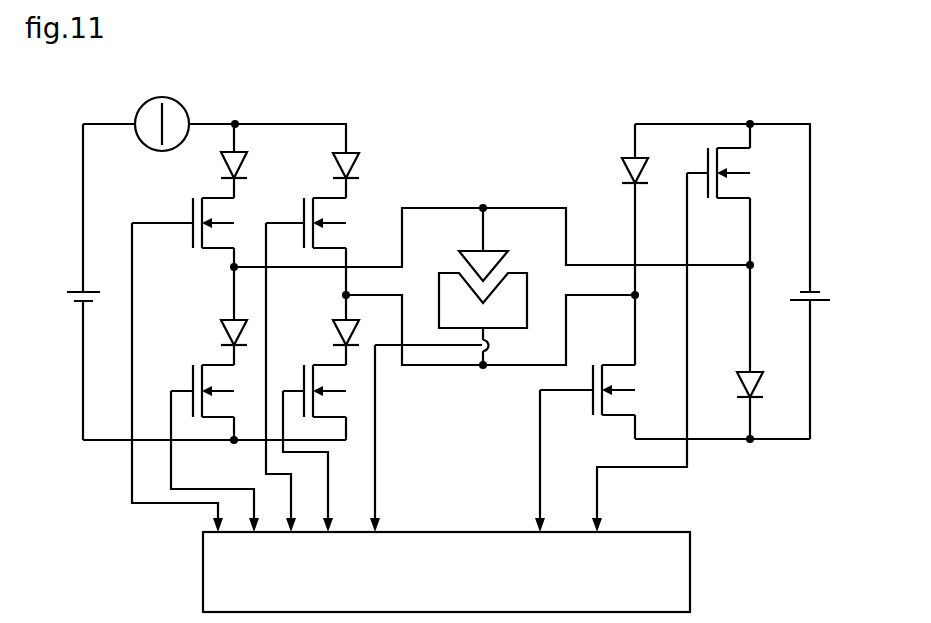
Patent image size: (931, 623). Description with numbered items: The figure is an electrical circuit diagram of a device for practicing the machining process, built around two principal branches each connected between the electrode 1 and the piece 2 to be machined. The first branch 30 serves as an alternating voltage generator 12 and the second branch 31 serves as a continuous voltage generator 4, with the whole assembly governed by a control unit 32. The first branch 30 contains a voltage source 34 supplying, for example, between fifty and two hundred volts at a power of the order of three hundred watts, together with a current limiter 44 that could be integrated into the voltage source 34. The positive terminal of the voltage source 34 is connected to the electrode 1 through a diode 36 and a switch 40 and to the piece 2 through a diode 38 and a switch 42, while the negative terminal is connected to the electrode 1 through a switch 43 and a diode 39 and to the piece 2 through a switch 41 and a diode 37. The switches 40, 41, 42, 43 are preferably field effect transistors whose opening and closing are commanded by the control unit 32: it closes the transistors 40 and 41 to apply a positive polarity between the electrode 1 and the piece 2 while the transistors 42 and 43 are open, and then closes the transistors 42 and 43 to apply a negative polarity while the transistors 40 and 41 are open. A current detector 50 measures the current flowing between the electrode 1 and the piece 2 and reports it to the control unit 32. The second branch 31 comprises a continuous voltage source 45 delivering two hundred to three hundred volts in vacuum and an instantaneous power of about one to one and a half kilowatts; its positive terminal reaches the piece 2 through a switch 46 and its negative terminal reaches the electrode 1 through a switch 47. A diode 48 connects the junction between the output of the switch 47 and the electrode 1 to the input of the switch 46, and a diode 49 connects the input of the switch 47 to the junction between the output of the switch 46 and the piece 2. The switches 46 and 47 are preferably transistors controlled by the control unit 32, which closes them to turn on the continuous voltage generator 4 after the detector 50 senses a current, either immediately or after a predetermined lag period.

The electrode 1 is at (468, 255).
The piece 2 is at (515, 305).
The continuous voltage generator 4 is at (616, 135).
The alternating voltage generator 12 is at (360, 118).
The first branch 30 is at (286, 113).
The second branch 31 is at (669, 112).
The control unit 32 is at (668, 570).
The voltage source 34 is at (94, 288).
The diode 36 is at (246, 168).
The diode 37 is at (334, 333).
The diode 38 is at (358, 168).
The diode 39 is at (222, 333).
The switch 40 is at (225, 213).
The switch 41 is at (334, 384).
The switch 42 is at (340, 213).
The switch 43 is at (222, 384).
The current limiter 44 is at (165, 97).
The continuous voltage source 45 is at (820, 293).
The switch 46 is at (634, 390).
The switch 47 is at (752, 184).
The diode 48 is at (762, 388).
The diode 49 is at (645, 173).
The current detector 50 is at (478, 354).